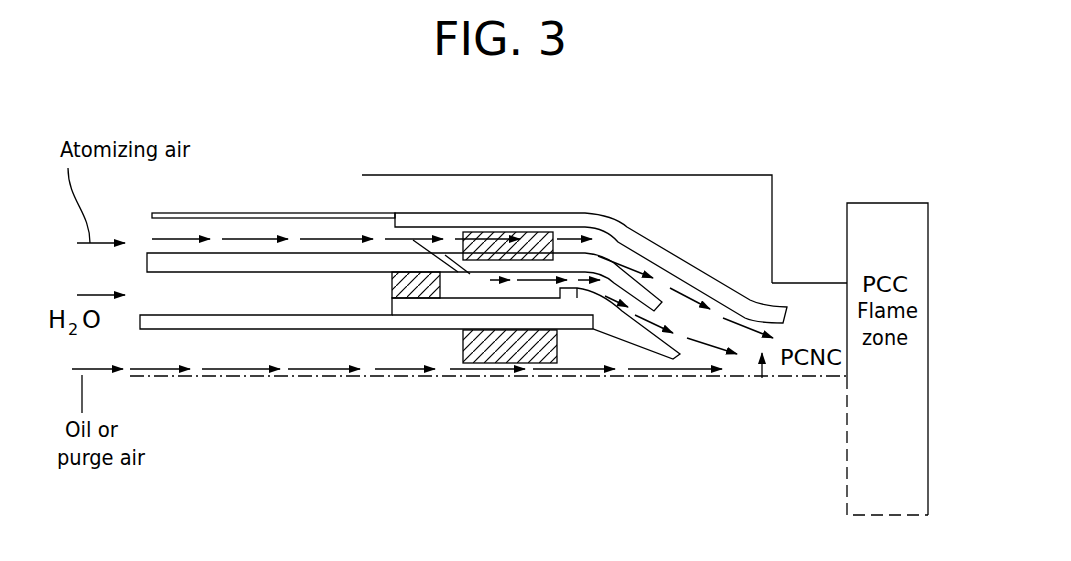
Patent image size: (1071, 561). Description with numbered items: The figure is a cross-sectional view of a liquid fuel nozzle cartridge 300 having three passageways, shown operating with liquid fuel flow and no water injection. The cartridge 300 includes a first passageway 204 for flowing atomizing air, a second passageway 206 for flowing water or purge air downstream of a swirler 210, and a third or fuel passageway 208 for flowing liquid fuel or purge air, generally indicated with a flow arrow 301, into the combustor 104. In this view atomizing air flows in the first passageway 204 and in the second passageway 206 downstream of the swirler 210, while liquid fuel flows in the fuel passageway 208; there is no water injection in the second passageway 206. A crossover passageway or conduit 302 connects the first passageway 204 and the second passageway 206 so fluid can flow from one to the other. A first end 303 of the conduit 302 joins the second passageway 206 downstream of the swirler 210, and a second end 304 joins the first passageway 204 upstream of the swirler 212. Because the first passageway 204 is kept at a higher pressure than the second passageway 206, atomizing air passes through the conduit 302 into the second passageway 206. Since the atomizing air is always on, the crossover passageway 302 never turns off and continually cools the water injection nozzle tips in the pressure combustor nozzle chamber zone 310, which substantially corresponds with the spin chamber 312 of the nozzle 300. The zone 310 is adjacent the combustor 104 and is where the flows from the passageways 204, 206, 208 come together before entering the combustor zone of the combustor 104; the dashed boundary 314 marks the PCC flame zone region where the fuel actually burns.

The combustor 104 is at (892, 153).
The first passageway 204 is at (165, 232).
The second passageway 206 is at (185, 294).
The third passageway 208 is at (185, 348).
The swirler 210 is at (392, 273).
The swirler 212 is at (540, 232).
The liquid fuel nozzle cartridge 300 is at (688, 174).
The flow arrow 301 is at (253, 374).
The crossover passageway 302 is at (447, 232).
The first end 303 is at (484, 288).
The second end 304 is at (413, 240).
The pressure combustor nozzle chamber zone 310 is at (816, 300).
The spin chamber 312 is at (762, 380).
The flame zone boundary 314 is at (847, 482).